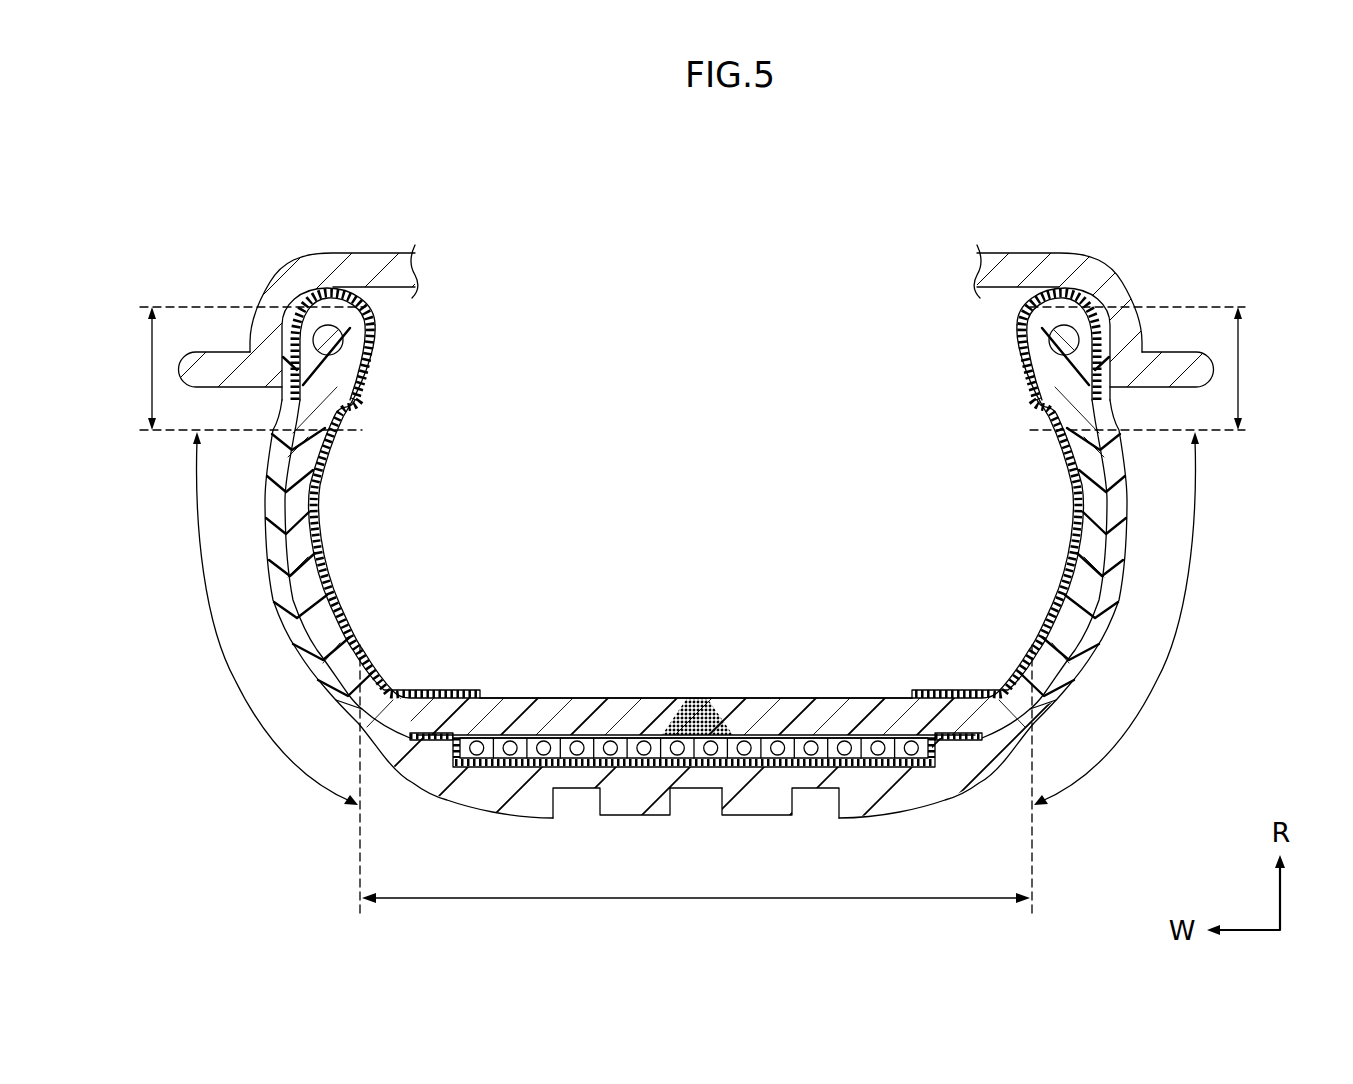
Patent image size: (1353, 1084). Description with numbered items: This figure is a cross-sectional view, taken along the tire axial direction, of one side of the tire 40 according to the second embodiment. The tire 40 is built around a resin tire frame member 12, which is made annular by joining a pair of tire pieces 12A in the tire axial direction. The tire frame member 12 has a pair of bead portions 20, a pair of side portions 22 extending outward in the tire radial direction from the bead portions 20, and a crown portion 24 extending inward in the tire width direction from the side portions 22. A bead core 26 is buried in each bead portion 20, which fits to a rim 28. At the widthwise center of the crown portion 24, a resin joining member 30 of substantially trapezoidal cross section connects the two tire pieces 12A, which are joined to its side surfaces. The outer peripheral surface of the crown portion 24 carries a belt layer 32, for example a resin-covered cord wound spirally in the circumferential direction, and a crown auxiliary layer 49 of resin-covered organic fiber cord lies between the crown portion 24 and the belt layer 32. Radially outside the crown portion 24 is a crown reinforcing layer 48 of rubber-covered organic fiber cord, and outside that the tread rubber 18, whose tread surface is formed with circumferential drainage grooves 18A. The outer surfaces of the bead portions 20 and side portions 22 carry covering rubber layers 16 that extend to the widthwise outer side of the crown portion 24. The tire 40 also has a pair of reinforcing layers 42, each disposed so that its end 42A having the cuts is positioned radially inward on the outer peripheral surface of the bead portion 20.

The tire frame member 12 is at (810, 612).
The tire piece 12A is at (616, 697).
The covering rubber layer 16 is at (290, 558).
The tread rubber 18 is at (463, 797).
The groove 18A is at (560, 797).
The bead portion 20 is at (695, 368).
The side portion 22 is at (697, 673).
The crown portion 24 is at (696, 912).
The bead core 26 is at (1033, 372).
The rim 28 is at (1112, 285).
The joining member 30 is at (700, 697).
The belt layer 32 is at (832, 786).
The tire 40 is at (1012, 160).
The reinforcing layer 42 is at (352, 684).
The end 42A is at (292, 388).
The crown reinforcing layer 48 is at (927, 792).
The crown auxiliary layer 49 is at (693, 797).